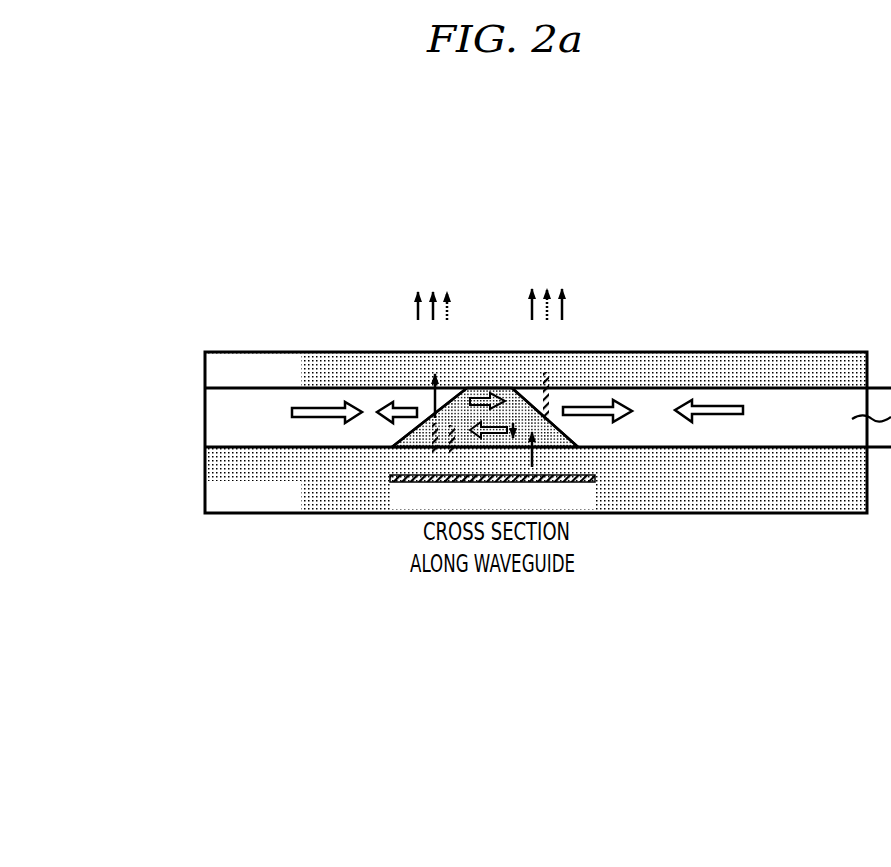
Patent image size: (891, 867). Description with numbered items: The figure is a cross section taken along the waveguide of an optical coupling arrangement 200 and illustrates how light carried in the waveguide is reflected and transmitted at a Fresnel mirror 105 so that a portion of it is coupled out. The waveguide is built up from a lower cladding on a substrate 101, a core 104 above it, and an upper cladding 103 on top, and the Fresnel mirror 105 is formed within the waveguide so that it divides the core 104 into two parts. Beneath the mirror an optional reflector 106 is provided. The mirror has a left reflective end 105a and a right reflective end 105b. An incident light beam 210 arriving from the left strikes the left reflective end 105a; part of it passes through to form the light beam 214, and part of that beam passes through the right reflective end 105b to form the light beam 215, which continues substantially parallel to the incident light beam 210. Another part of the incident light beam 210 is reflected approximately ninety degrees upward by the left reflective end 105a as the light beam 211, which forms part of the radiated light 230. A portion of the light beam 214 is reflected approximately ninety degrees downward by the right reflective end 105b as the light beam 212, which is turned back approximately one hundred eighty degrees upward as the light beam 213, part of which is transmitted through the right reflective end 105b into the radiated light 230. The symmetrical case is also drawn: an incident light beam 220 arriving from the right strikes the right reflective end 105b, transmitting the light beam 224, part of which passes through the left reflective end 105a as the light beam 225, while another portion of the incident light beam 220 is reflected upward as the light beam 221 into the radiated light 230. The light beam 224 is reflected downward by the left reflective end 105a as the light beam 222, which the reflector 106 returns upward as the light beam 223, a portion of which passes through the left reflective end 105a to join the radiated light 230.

The optical waveguide coupler cross section 200 is at (521, 96).
The substrate 101 is at (205, 494).
The upper cladding 103 is at (205, 372).
The core 104 is at (205, 422).
The Fresnel mirror 105 is at (507, 378).
The left reflective end 105a is at (446, 386).
The right reflective end 105b is at (529, 386).
The reflector 106 is at (600, 483).
The incident light beam 210 is at (335, 405).
The light beam 211 is at (422, 396).
The light beam 212 is at (556, 425).
The light beam 213 is at (546, 452).
The light beam 214 is at (482, 387).
The light beam 215 is at (627, 403).
The incident light beam 220 is at (723, 405).
The light beam 221 is at (559, 394).
The light beam 222 is at (425, 435).
The light beam 223 is at (446, 461).
The light beam 224 is at (494, 419).
The light beam 225 is at (383, 407).
The radiated light 230 is at (430, 266).